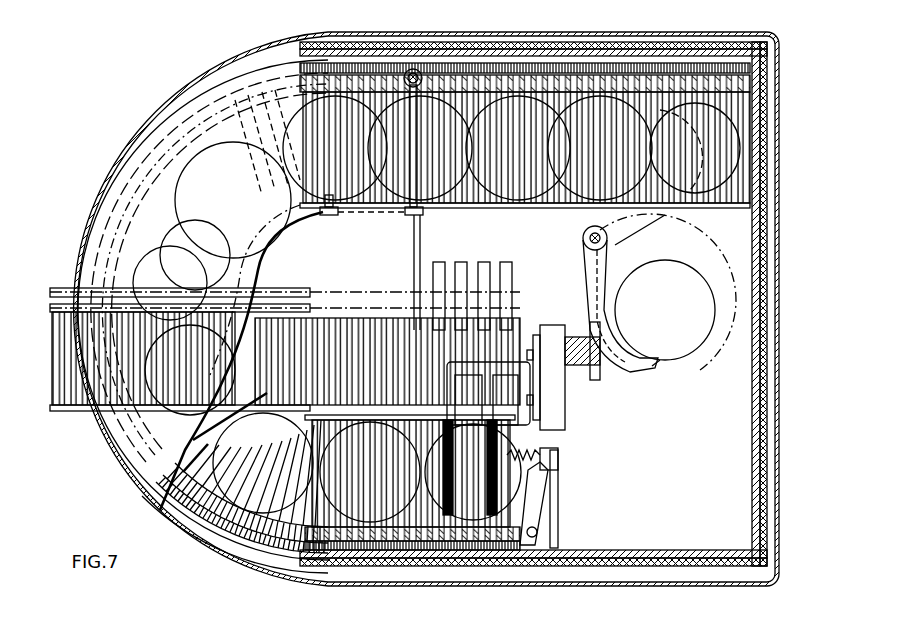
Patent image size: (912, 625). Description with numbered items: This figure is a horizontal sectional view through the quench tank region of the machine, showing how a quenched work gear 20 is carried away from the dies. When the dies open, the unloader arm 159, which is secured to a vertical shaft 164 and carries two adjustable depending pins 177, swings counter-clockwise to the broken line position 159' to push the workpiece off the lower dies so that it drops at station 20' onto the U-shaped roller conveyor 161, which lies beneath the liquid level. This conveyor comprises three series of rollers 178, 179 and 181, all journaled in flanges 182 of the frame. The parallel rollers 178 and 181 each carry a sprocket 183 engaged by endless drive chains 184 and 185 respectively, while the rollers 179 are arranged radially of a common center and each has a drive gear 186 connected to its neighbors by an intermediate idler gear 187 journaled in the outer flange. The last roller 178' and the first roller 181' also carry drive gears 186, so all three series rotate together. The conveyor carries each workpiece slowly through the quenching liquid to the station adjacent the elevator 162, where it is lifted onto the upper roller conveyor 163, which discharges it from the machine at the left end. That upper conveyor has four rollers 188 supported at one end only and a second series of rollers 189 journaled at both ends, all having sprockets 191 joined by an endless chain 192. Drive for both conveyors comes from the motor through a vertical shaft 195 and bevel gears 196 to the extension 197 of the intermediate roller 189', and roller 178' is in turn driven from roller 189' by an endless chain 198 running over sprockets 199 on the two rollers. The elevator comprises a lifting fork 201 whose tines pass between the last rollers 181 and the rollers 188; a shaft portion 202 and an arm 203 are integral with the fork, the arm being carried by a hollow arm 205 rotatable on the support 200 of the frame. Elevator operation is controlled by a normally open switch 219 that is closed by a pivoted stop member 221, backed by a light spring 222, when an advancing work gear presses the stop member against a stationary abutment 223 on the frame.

The work gear 20 is at (441, 309).
The station 20' is at (668, 292).
The unloader arm 159 is at (591, 306).
The broken line position of unloader arm 159' is at (738, 150).
The U-shaped roller conveyor 161 is at (250, 160).
The elevator 162 is at (500, 500).
The upper roller conveyor 163 is at (52, 410).
The vertical shaft 164 is at (584, 234).
The depending pins 177 is at (620, 245).
The rollers 178 is at (547, 147).
The last roller 178' is at (265, 107).
The rollers 179 is at (277, 97).
The rollers 181 is at (410, 516).
The first roller 181' is at (242, 547).
The flanges 182 is at (766, 66).
The sprocket 183 is at (485, 540).
The drive chain 184 is at (718, 68).
The drive chain 185 is at (378, 517).
The drive gear 186 is at (182, 530).
The idler gear 187 is at (240, 580).
The rollers 188 is at (502, 318).
The rollers 189 is at (387, 331).
The intermediate roller 189' is at (395, 272).
The sprockets 191 is at (196, 226).
The endless chain 192 is at (168, 246).
The vertical shaft 195 is at (400, 66).
The bevel gears 196 is at (440, 71).
The extension 197 is at (480, 66).
The endless chain 198 is at (368, 225).
The sprocket 199 is at (317, 218).
The support 200 is at (603, 375).
The lifting fork 201 is at (447, 392).
The shaft portion 202 is at (510, 360).
The arm 203 is at (530, 415).
The hollow arm 205 is at (560, 398).
The switch 219 is at (548, 485).
The stop member 221 is at (558, 505).
The spring 222 is at (542, 454).
The stationary abutment 223 is at (558, 470).